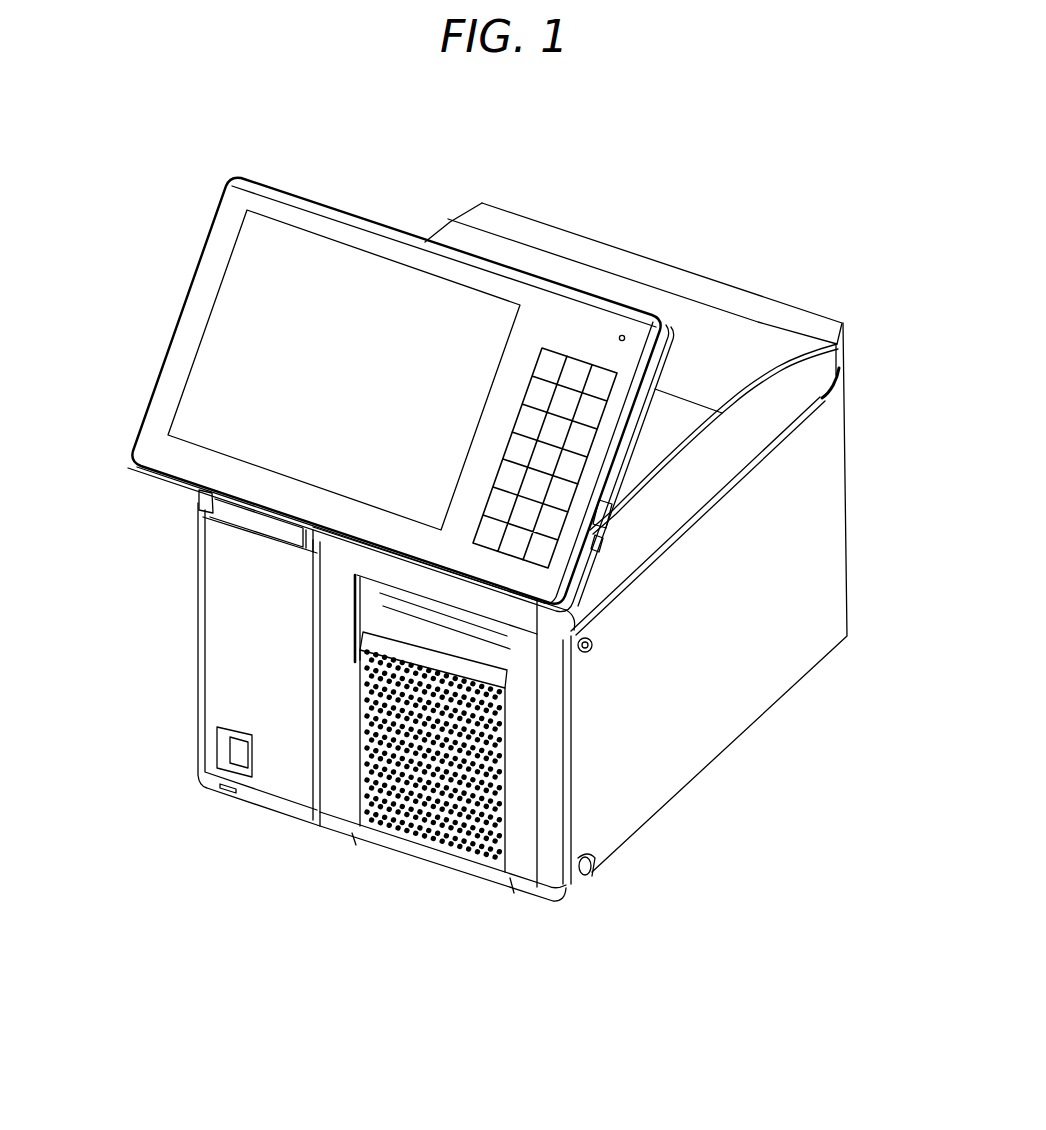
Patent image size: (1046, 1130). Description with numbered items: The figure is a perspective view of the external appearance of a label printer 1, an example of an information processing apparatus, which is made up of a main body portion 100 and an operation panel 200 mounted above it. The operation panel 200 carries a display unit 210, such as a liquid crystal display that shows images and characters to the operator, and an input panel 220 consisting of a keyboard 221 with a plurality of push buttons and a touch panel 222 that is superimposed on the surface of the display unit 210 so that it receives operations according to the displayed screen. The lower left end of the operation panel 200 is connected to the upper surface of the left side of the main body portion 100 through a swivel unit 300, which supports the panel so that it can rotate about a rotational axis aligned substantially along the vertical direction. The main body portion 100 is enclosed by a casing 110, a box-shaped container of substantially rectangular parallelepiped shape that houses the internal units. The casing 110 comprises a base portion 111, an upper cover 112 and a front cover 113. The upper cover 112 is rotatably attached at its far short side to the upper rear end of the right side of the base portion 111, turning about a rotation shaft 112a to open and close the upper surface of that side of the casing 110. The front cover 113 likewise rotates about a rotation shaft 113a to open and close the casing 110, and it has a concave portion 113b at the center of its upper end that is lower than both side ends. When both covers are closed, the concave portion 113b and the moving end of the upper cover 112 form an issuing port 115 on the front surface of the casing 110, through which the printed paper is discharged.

The label printer 1 is at (214, 162).
The main body portion 100 is at (198, 668).
The casing 110 is at (845, 800).
The base portion 111 is at (762, 678).
The upper cover 112 is at (637, 538).
The rotation shaft 112a is at (840, 392).
The front cover 113 is at (485, 777).
The rotation shaft 113a is at (572, 884).
The concave portion 113b is at (407, 656).
The issuing port 115 is at (357, 615).
The operation panel 200 is at (171, 332).
The display unit 210 is at (303, 248).
The input panel 220 is at (633, 146).
The keyboard 221 is at (572, 370).
The touch panel 222 is at (445, 300).
The swivel unit 300 is at (203, 496).